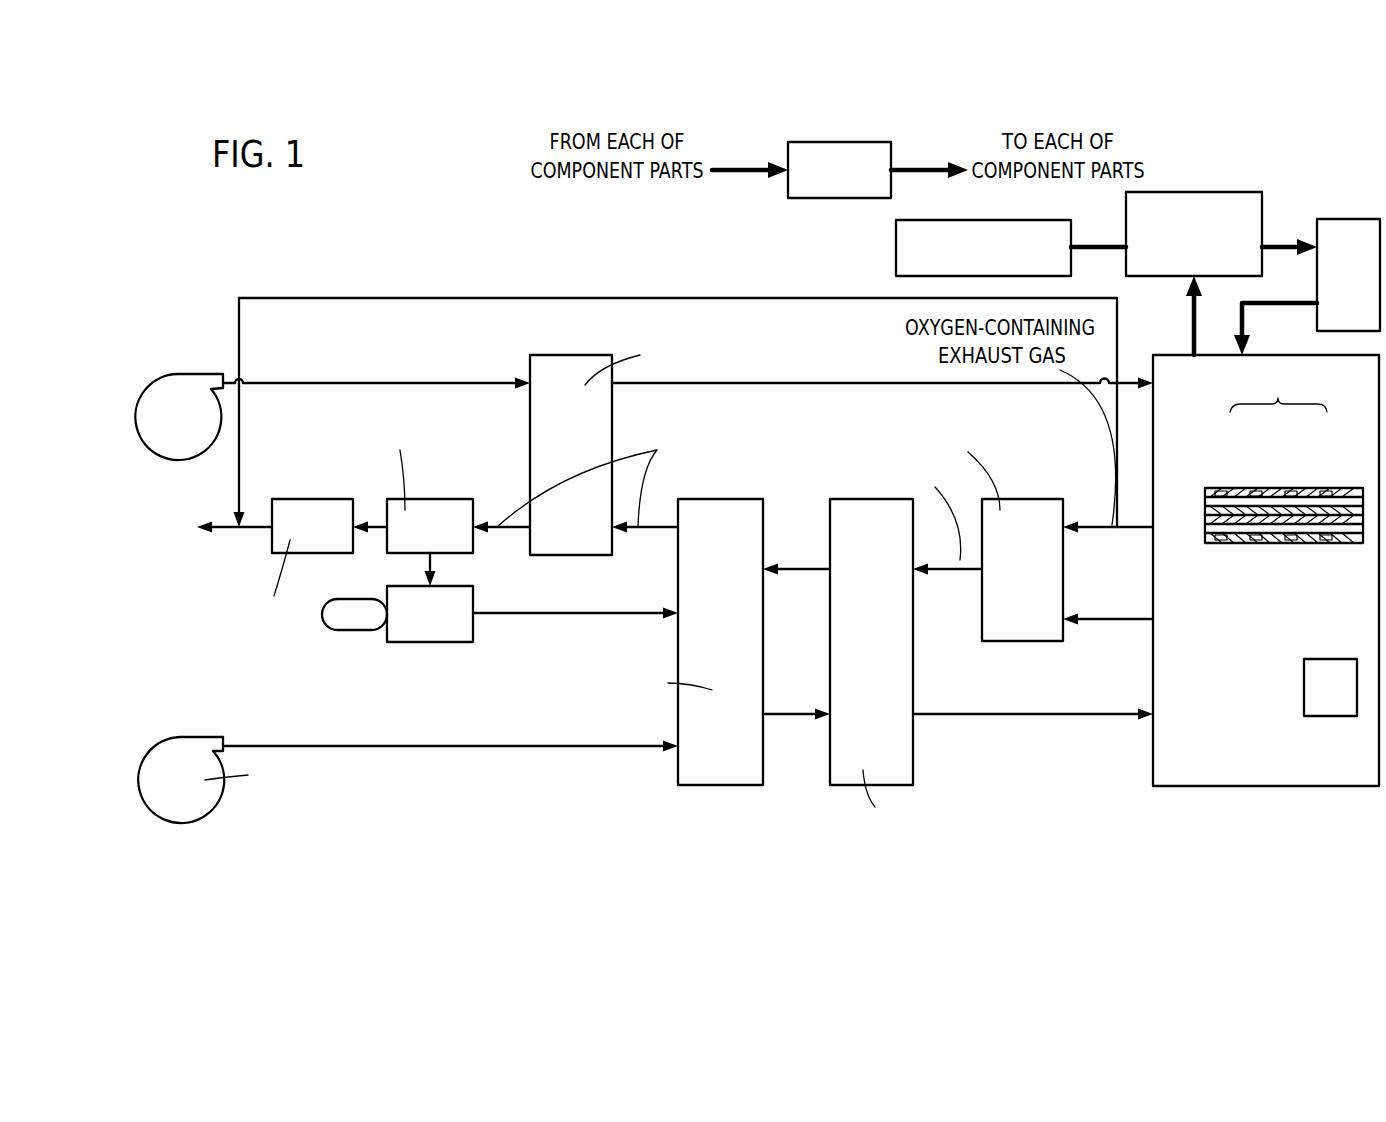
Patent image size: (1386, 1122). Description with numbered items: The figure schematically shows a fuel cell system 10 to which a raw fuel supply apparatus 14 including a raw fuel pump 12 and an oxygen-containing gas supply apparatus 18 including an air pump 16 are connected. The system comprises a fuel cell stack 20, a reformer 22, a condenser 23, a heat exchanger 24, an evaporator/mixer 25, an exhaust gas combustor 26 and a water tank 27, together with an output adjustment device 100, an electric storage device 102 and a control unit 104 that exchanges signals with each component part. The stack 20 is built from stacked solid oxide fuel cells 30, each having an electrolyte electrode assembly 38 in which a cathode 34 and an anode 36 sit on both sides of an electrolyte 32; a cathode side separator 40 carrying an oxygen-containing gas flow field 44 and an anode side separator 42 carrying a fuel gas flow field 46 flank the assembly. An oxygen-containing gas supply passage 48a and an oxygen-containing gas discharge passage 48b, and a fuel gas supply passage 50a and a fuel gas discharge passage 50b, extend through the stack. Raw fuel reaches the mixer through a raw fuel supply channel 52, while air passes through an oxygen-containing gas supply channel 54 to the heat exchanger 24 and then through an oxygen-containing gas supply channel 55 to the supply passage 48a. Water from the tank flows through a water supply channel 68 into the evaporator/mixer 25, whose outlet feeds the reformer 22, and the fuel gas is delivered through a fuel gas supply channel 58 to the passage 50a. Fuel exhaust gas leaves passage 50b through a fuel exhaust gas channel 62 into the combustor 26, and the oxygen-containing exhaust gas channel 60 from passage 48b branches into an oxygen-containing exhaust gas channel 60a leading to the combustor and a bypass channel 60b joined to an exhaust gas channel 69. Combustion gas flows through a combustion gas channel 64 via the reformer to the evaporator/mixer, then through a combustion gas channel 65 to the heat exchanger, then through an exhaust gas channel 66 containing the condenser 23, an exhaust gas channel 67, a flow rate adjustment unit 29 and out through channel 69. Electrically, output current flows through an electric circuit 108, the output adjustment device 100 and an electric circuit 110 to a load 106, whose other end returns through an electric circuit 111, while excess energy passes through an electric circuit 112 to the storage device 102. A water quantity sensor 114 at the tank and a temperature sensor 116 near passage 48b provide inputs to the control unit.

The fuel cell system 10 is at (382, 189).
The raw fuel pump 12 is at (208, 812).
The raw fuel supply apparatus 14 is at (183, 717).
The air pump 16 is at (172, 460).
The oxygen-containing gas supply apparatus 18 is at (203, 347).
The fuel cell stack 20 is at (1275, 787).
The reformer 22 is at (918, 768).
The condenser 23 is at (418, 499).
The heat exchanger 24 is at (560, 355).
The evaporator/mixer 25 is at (713, 499).
The exhaust gas combustor 26 is at (1008, 499).
The water tank 27 is at (437, 642).
The flow rate adjustment unit 29 is at (290, 499).
The fuel cell 30 is at (1292, 580).
The electrolyte 32 is at (1272, 520).
The cathode 34 is at (1237, 520).
The anode 36 is at (1300, 500).
The electrolyte electrode assembly 38 is at (1278, 395).
The cathode side separator 40 is at (1232, 543).
The anode side separator 42 is at (1213, 488).
The oxygen-containing gas flow field 44 is at (1338, 543).
The fuel gas flow field 46 is at (1346, 488).
The oxygen-containing gas supply passage 48a is at (1160, 385).
The oxygen-containing gas discharge passage 48b is at (1155, 521).
The fuel gas supply passage 50a is at (1158, 716).
The fuel gas discharge passage 50b is at (1158, 619).
The raw fuel supply channel 52 is at (478, 749).
The oxygen-containing gas supply channel 54 is at (333, 381).
The oxygen-containing gas supply channel 55 is at (822, 383).
The fuel gas supply channel 58 is at (1008, 716).
The oxygen-containing exhaust gas channel 60 is at (1143, 527).
The oxygen-containing exhaust gas channel 60a is at (1092, 524).
The oxygen-containing exhaust gas bypass channel 60b is at (722, 298).
The fuel exhaust gas channel 62 is at (1085, 618).
The combustion gas channel 64 is at (946, 573).
The combustion gas channel 65 is at (652, 530).
The exhaust gas channel 66 is at (496, 531).
The exhaust gas channel 67 is at (372, 524).
The water supply channel 68 is at (530, 615).
The exhaust gas channel 69 is at (225, 523).
The output adjustment device 100 is at (1192, 192).
The electric storage device 102 is at (896, 252).
The control unit 104 is at (851, 199).
The load 106 is at (1347, 219).
The electric circuit 108 is at (1192, 302).
The electric circuit 110 is at (1288, 247).
The electric circuit 111 is at (1260, 306).
The electric circuit 112 is at (1097, 247).
The water quantity sensor 114 is at (363, 600).
The temperature sensor 116 is at (1330, 717).